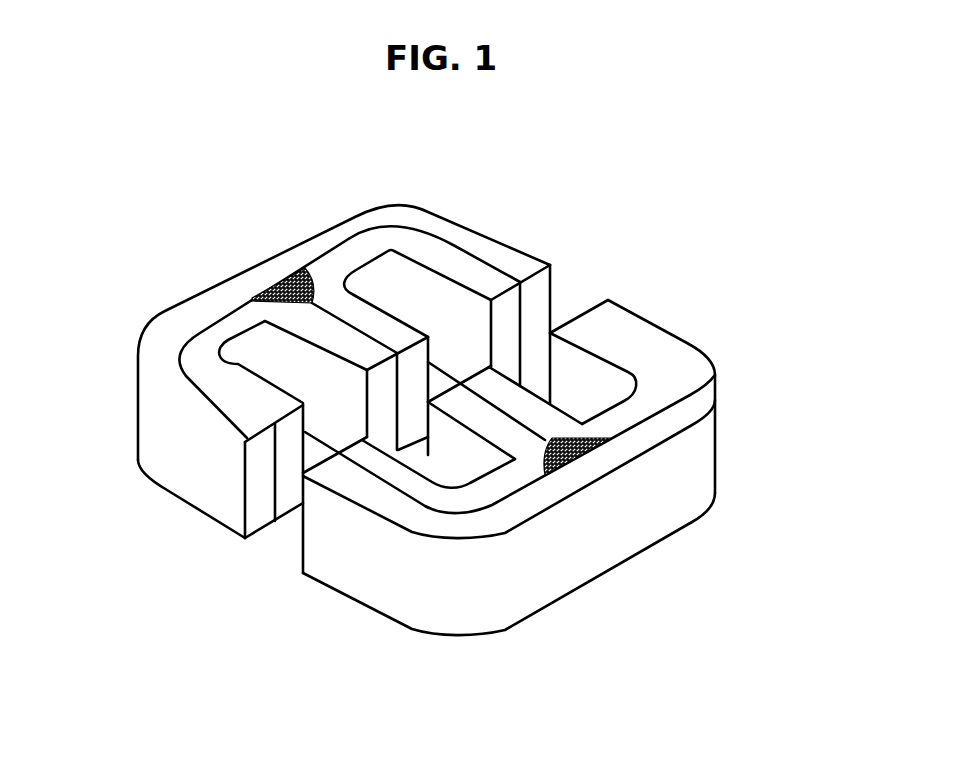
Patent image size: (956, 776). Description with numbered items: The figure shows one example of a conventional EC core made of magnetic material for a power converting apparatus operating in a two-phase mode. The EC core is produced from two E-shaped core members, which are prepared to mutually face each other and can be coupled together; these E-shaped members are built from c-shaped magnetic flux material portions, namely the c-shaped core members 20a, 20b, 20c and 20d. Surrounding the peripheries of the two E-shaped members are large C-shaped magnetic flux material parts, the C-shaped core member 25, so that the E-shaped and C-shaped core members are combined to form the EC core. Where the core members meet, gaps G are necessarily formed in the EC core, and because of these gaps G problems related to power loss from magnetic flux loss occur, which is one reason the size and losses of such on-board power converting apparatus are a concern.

The C-shaped core member 25 is at (162, 333).
The c-shaped core member 20a is at (465, 263).
The c-shaped core member 20b is at (247, 388).
The c-shaped core member 20c is at (393, 473).
The c-shaped core member 20d is at (618, 352).
The gap G is at (287, 277).